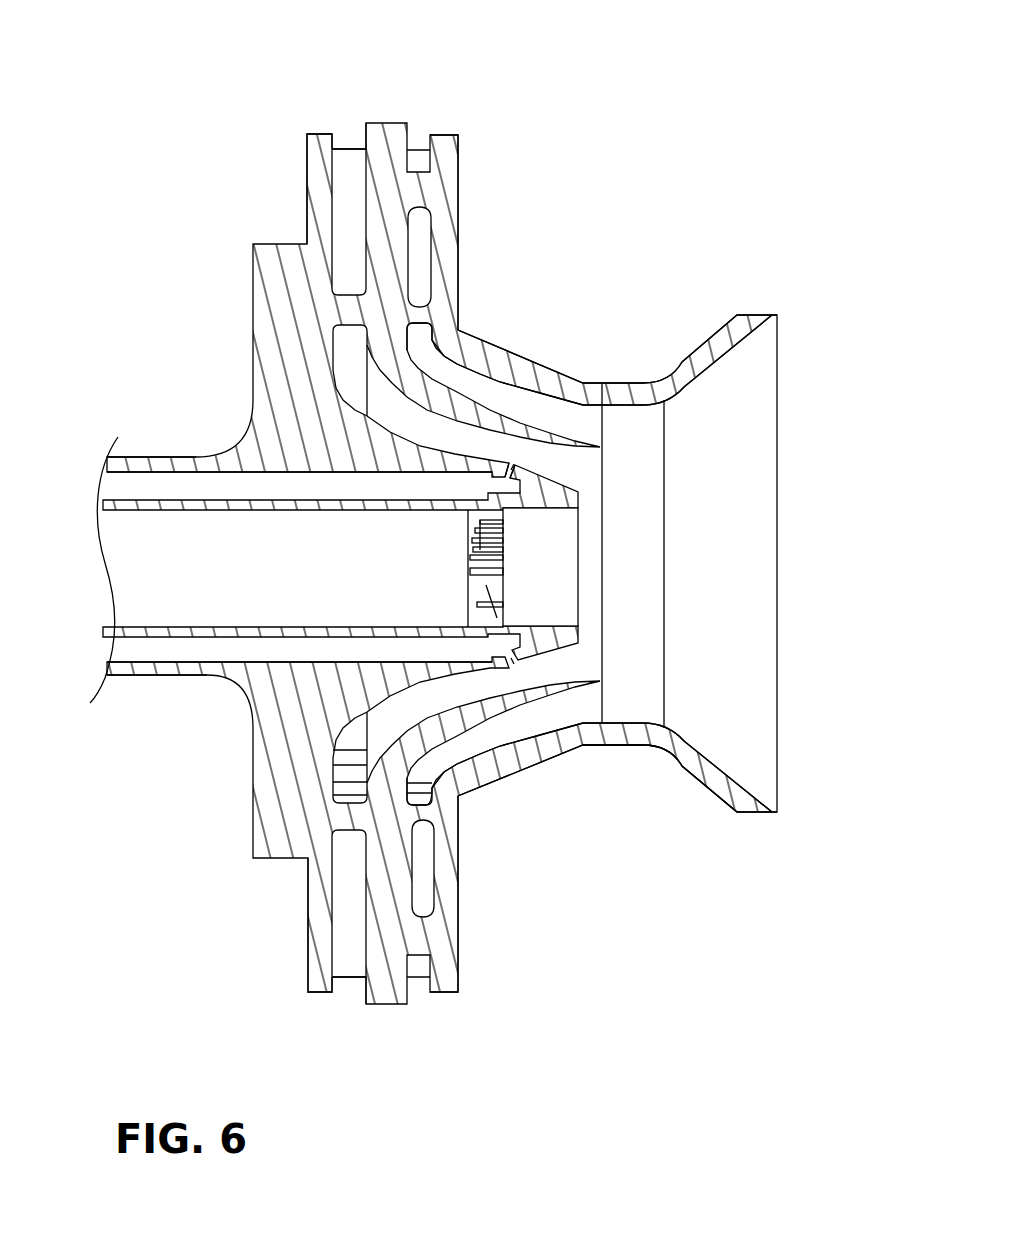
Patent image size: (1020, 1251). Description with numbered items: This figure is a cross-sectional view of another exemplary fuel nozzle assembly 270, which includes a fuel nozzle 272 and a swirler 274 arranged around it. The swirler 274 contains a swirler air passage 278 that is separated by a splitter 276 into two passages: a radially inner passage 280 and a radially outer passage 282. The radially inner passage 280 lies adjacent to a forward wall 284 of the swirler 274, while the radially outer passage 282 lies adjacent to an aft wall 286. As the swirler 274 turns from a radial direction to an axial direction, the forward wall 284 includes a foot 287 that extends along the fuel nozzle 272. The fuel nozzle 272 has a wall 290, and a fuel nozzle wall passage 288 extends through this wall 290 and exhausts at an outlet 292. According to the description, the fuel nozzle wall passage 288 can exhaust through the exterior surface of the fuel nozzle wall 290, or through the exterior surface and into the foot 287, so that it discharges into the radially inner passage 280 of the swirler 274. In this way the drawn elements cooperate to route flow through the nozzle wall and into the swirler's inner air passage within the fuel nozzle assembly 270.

The fuel nozzle assembly 270 is at (461, 504).
The fuel nozzle 272 is at (140, 553).
The swirler 274 is at (298, 183).
The splitter 276 is at (452, 398).
The swirler air passage 278 is at (383, 398).
The radially inner passage 280 is at (451, 705).
The radially outer passage 282 is at (548, 735).
The forward wall 284 is at (328, 142).
The aft wall 286 is at (445, 182).
The foot 287 is at (326, 420).
The fuel nozzle wall passage 288 is at (229, 479).
The wall 290 is at (351, 516).
The outlet 292 is at (537, 465).